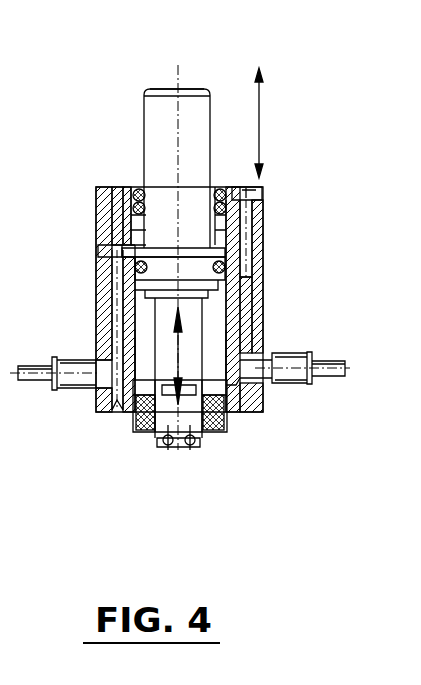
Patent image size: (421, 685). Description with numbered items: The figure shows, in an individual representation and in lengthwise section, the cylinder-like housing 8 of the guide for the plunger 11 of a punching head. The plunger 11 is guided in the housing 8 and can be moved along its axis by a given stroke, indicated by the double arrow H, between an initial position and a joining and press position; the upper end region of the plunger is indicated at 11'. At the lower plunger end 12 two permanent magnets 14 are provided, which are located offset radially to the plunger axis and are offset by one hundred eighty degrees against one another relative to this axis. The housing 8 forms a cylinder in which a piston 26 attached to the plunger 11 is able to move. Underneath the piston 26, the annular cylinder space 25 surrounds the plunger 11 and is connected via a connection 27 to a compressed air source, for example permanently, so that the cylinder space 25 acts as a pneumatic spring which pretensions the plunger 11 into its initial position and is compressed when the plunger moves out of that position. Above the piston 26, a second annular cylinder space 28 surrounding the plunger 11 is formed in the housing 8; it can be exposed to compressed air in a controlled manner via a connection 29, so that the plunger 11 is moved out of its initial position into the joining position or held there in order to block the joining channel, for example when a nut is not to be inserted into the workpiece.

The cylindrical housing 8 is at (247, 313).
The plunger 11 is at (139, 168).
The piston rod end face 11' is at (210, 58).
The lower plunger end 12 is at (178, 447).
The permanent magnets 14 is at (162, 447).
The cylinder space 25 is at (233, 335).
The piston 26 is at (240, 269).
The connection 27 is at (318, 372).
The second annular cylinder space 28 is at (147, 250).
The connection 29 is at (82, 383).
The stroke H is at (272, 123).